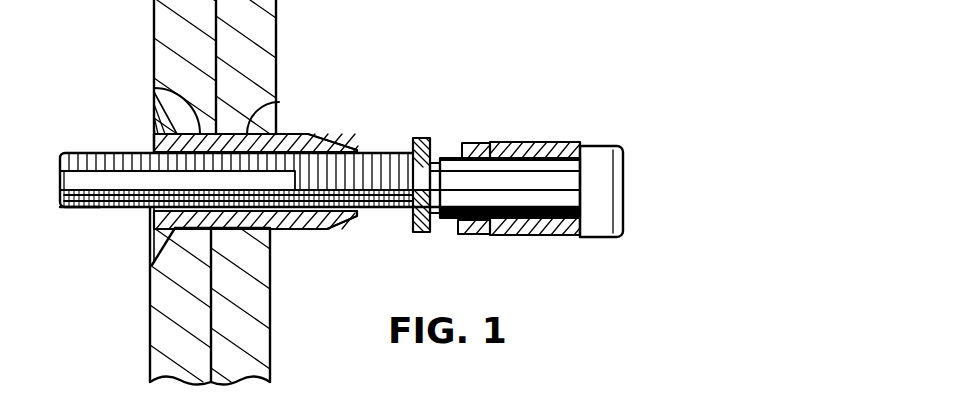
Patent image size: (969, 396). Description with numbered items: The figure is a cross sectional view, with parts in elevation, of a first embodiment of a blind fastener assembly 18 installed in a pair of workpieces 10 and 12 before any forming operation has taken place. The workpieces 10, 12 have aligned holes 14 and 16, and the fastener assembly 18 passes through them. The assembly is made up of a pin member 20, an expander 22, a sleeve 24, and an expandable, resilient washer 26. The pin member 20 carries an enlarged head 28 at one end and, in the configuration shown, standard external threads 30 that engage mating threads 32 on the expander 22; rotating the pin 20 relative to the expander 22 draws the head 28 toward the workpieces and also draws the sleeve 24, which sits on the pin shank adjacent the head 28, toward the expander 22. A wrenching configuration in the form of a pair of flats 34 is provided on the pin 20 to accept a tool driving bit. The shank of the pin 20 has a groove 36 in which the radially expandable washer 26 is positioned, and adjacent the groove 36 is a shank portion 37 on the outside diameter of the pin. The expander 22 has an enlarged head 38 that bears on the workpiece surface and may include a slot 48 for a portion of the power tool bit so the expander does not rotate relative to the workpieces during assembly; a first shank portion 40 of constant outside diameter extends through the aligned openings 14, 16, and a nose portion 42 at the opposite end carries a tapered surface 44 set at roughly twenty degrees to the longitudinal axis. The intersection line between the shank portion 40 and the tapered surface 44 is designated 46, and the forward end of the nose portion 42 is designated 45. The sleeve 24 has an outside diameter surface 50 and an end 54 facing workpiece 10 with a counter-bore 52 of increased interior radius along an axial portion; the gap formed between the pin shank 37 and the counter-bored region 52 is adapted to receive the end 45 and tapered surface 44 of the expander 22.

The workpiece 10 is at (255, 60).
The workpiece 12 is at (170, 55).
The hole 14 is at (278, 86).
The hole 16 is at (157, 85).
The blind fastener assembly 18 is at (362, 139).
The pin member 20 is at (84, 209).
The expander 22 is at (148, 240).
The sleeve 24 is at (520, 143).
The expandable, resilient washer 26 is at (427, 138).
The enlarged head 28 is at (607, 181).
The external threads 30 is at (100, 158).
The mating threads 32 is at (170, 144).
The flats 34 is at (77, 180).
The groove 36 is at (440, 170).
The shank portion 37 is at (445, 158).
The enlarged head 38 is at (150, 221).
The first shank portion 40 is at (283, 230).
The nose portion 42 is at (333, 227).
The tapered surface 44 is at (336, 142).
The forward end of nose portion 45 is at (356, 219).
The intersection line 46 is at (315, 137).
The slot 48 is at (152, 116).
The outside diameter surface 50 is at (558, 142).
The counter-bore 52 is at (468, 143).
The end 54 is at (458, 231).